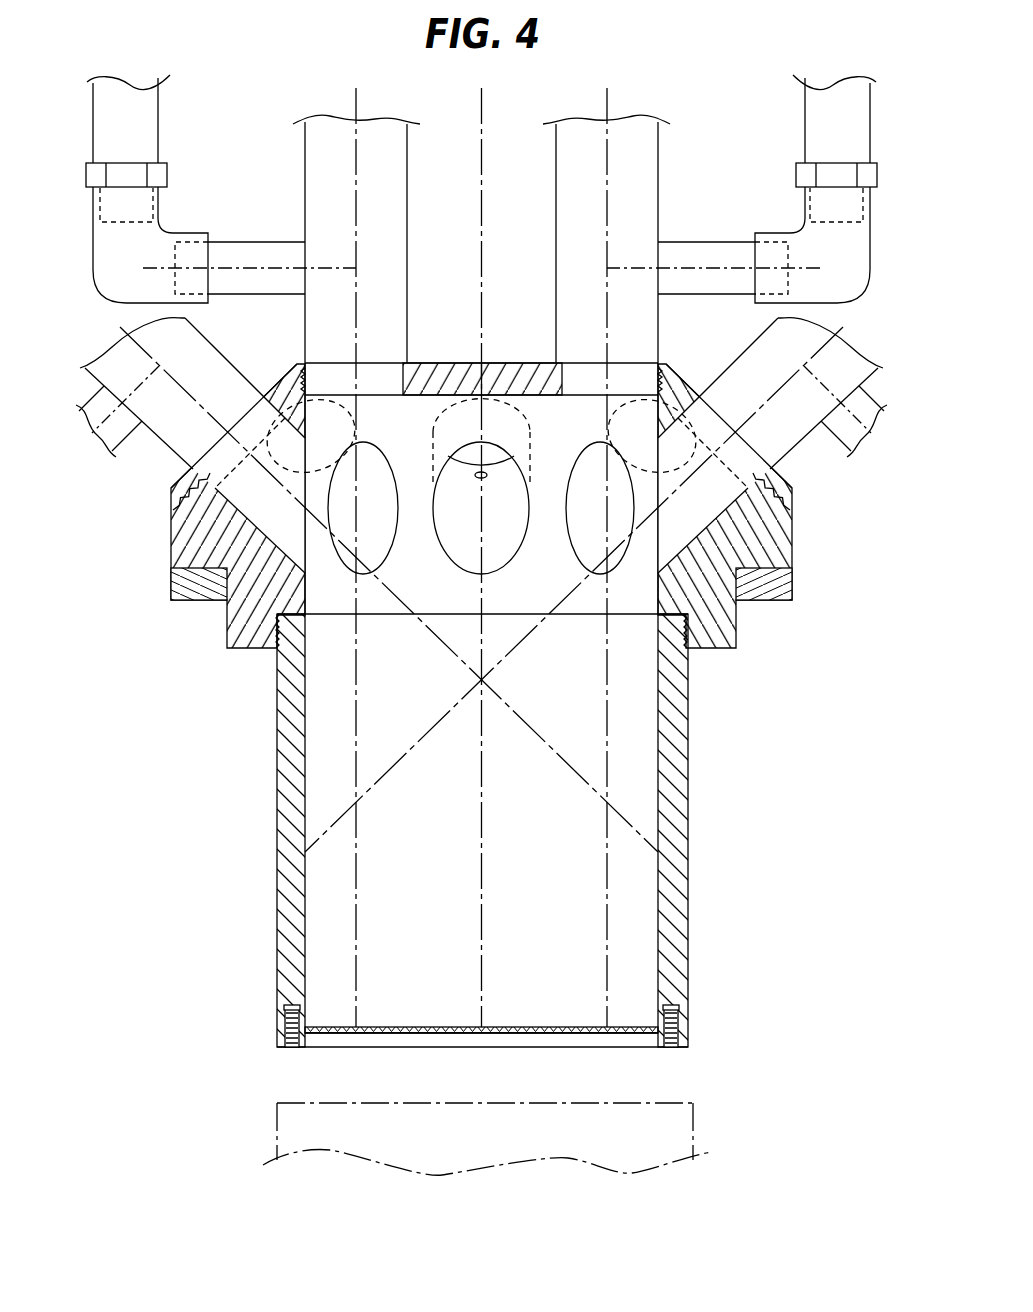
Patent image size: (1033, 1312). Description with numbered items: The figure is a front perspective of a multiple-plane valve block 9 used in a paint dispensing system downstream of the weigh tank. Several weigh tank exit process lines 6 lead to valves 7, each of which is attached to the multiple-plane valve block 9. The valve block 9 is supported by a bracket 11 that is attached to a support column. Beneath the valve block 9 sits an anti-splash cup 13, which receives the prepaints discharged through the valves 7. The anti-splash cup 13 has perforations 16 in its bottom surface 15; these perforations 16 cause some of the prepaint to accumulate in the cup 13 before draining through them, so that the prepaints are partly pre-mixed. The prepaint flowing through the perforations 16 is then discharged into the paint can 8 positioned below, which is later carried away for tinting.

The weigh tank exit process line 6 is at (148, 108).
The valve 7 is at (318, 203).
The paint can 8 is at (693, 1128).
The multiple-plane valve block 9 is at (757, 540).
The bracket 11 is at (757, 597).
The anti-splash cup 13 is at (690, 820).
The bottom surface 15 is at (692, 1045).
The perforations 16 is at (376, 1034).